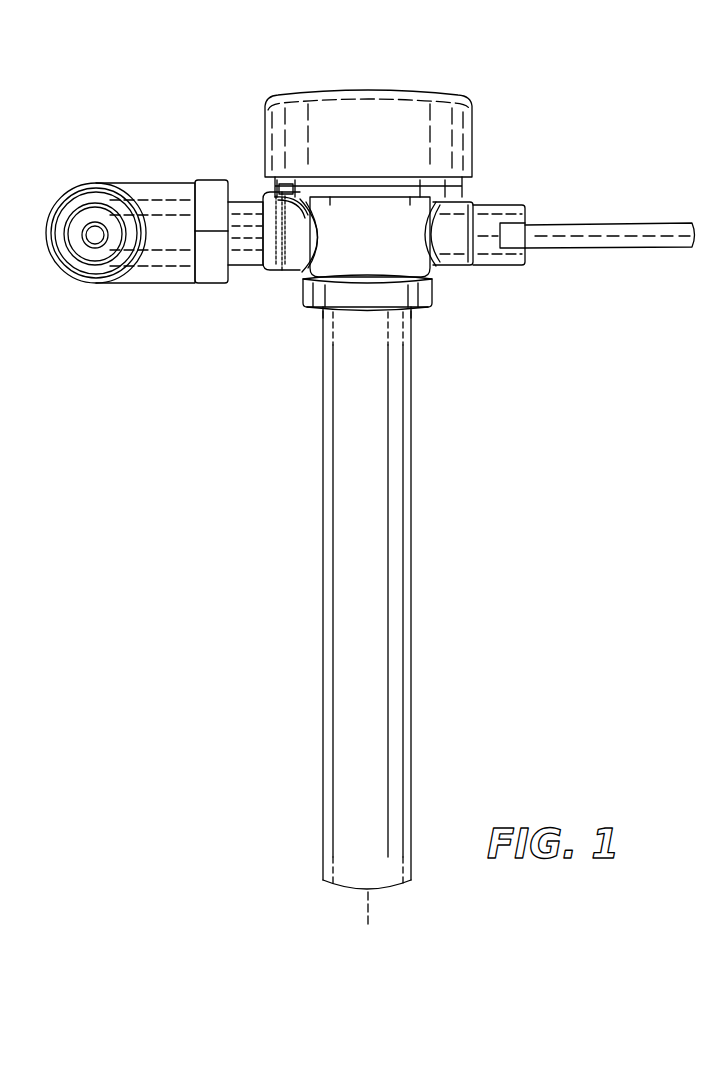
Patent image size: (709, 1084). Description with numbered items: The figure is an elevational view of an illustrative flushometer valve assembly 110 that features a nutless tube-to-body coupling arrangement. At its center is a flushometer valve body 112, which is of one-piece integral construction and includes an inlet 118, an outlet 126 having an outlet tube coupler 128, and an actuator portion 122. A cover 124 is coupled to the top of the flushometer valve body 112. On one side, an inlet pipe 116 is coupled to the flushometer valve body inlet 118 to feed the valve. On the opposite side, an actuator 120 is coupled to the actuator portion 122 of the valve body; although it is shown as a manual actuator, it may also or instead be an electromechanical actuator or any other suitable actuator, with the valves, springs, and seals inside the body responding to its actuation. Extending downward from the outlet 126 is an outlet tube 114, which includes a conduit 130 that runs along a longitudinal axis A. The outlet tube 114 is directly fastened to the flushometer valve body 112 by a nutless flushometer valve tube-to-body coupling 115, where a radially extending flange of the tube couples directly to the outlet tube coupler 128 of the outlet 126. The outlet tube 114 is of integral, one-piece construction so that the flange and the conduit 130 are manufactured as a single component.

The flushometer valve assembly 110 is at (178, 115).
The flushometer valve body 112 is at (494, 182).
The outlet tube 114 is at (300, 508).
The nutless flushometer valve tube-to-body coupling 115 is at (310, 320).
The inlet pipe 116 is at (165, 172).
The flushometer valve body inlet 118 is at (255, 188).
The actuator 120 is at (564, 210).
The actuator portion 122 is at (462, 277).
The cover 124 is at (452, 86).
The outlet 126 is at (421, 352).
The outlet tube coupler 128 is at (417, 307).
The conduit 130 is at (324, 690).
The longitudinal axis A is at (368, 910).